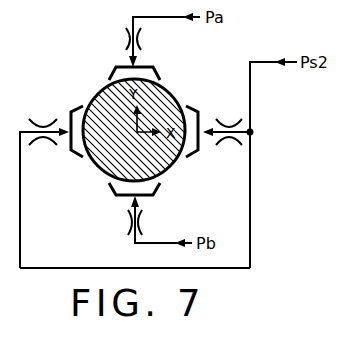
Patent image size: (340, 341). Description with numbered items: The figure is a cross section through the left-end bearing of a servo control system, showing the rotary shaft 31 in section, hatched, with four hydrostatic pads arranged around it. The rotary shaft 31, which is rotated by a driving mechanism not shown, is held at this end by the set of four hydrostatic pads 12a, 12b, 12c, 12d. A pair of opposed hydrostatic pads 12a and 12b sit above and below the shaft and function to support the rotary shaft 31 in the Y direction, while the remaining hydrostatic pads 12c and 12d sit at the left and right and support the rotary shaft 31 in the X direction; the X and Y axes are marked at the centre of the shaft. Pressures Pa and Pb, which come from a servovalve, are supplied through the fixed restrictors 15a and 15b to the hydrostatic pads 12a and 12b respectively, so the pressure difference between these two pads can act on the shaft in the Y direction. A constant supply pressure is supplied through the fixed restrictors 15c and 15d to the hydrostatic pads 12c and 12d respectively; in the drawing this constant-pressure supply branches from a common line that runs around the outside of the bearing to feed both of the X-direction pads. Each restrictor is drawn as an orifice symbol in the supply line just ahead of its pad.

The hydrostatic pad 12a is at (114, 71).
The hydrostatic pad 12b is at (115, 192).
The hydrostatic pad 12c is at (71, 112).
The hydrostatic pad 12d is at (194, 153).
The fixed restrictor 15a is at (143, 40).
The fixed restrictor 15b is at (144, 222).
The fixed restrictor 15c is at (49, 144).
The fixed restrictor 15d is at (228, 121).
The rotary shaft 31 is at (92, 167).